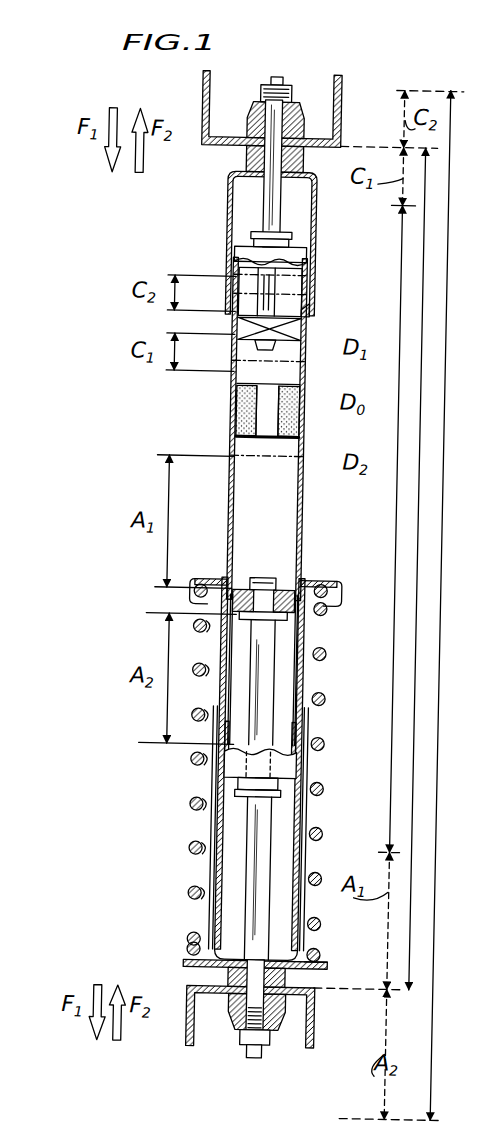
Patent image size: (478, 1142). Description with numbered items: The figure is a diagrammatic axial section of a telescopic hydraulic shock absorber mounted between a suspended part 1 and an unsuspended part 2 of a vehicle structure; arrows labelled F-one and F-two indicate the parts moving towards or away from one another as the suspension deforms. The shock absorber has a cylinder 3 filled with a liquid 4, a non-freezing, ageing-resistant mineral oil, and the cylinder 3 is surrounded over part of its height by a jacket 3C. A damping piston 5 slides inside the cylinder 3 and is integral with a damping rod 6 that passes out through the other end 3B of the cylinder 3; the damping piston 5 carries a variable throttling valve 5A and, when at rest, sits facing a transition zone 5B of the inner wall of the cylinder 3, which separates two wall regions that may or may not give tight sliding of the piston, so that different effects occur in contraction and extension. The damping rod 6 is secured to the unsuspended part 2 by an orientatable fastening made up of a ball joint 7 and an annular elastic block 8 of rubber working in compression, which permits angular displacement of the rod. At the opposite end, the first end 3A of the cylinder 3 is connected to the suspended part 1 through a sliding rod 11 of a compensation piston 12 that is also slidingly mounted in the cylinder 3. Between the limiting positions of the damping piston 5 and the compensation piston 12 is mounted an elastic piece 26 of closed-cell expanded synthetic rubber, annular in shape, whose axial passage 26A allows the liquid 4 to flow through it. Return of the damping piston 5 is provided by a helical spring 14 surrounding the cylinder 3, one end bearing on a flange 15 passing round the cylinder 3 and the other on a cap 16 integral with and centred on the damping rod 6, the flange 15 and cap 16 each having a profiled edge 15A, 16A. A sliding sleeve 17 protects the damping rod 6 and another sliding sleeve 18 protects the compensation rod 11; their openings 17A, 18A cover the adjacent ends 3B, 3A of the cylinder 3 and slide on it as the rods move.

The suspended part 1 is at (334, 92).
The unsuspended part 2 is at (324, 1021).
The cylinder 3 is at (232, 497).
The first end of cylinder 3A is at (240, 252).
The other end of cylinder 3B is at (240, 783).
The jacket 3C is at (318, 695).
The liquid 4 is at (276, 530).
The damping piston 5 is at (265, 579).
The variable throttling valve 5A is at (300, 590).
The transition zone 5B is at (250, 590).
The damping rod 6 is at (286, 840).
The ball joint 7 is at (247, 126).
The annular elastic block 8 is at (239, 158).
The sliding rod 11 is at (264, 210).
The compensation piston 12 is at (297, 318).
The spring 14 is at (331, 650).
The flange 15 is at (340, 584).
The profiled edge 15A is at (206, 588).
The cap 16 is at (219, 963).
The profiled edge 16A is at (328, 950).
The sliding sleeve 17 is at (313, 770).
The opening 17A is at (321, 735).
The sliding sleeve 18 is at (318, 234).
The opening 18A is at (316, 310).
The elastic piece 26 is at (246, 445).
The axial passage 26A is at (275, 434).